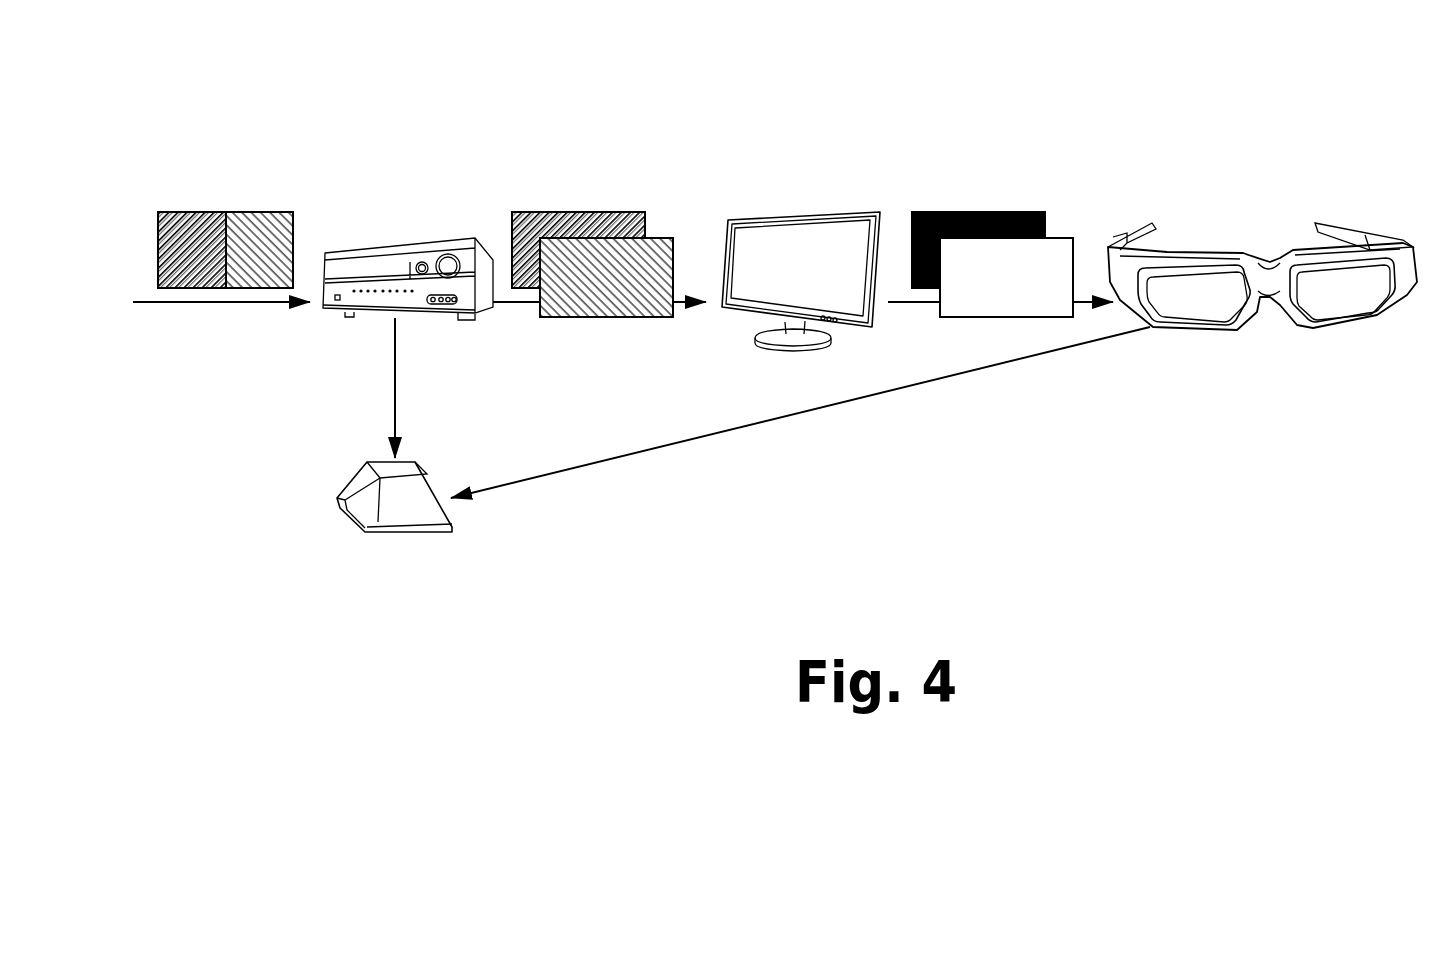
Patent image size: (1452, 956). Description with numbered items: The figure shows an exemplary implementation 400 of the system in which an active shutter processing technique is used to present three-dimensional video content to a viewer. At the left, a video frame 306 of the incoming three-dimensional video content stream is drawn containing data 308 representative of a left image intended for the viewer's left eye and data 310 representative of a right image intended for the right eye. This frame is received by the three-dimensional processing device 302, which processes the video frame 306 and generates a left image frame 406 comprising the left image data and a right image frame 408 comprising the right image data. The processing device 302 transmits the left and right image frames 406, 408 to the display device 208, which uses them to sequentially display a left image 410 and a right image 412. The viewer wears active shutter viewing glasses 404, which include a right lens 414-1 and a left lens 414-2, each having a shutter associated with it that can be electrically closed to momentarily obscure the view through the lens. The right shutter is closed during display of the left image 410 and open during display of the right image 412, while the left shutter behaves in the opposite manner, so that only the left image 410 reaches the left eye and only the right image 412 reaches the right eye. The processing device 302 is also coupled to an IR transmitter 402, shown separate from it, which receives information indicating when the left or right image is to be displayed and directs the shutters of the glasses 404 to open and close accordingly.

The implementation 400 is at (272, 112).
The video frame 306 is at (293, 202).
The data representative of a left image 308 is at (194, 290).
The data representative of a right image 310 is at (266, 290).
The 3D processing device 302 is at (400, 245).
The left image frame 406 is at (588, 210).
The right image frame 408 is at (660, 237).
The display device 208 is at (808, 213).
The left image 410 is at (987, 210).
The right image 412 is at (1060, 237).
The active shutter 3D viewing glasses 404 is at (1327, 222).
The right lens 414-1 is at (1207, 310).
The left lens 414-2 is at (1343, 310).
The IR transmitter 402 is at (405, 535).